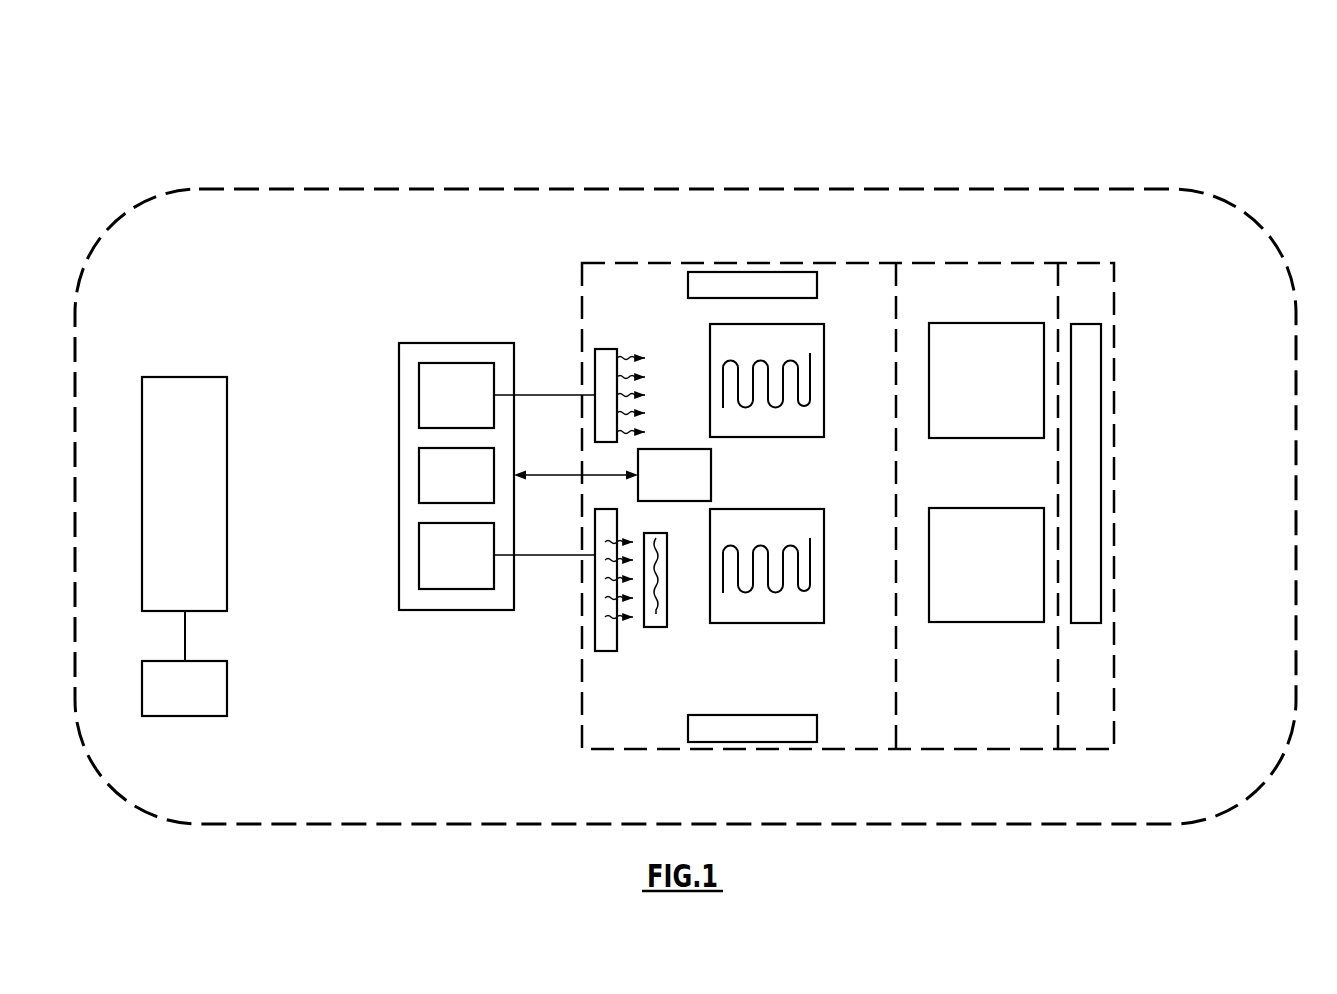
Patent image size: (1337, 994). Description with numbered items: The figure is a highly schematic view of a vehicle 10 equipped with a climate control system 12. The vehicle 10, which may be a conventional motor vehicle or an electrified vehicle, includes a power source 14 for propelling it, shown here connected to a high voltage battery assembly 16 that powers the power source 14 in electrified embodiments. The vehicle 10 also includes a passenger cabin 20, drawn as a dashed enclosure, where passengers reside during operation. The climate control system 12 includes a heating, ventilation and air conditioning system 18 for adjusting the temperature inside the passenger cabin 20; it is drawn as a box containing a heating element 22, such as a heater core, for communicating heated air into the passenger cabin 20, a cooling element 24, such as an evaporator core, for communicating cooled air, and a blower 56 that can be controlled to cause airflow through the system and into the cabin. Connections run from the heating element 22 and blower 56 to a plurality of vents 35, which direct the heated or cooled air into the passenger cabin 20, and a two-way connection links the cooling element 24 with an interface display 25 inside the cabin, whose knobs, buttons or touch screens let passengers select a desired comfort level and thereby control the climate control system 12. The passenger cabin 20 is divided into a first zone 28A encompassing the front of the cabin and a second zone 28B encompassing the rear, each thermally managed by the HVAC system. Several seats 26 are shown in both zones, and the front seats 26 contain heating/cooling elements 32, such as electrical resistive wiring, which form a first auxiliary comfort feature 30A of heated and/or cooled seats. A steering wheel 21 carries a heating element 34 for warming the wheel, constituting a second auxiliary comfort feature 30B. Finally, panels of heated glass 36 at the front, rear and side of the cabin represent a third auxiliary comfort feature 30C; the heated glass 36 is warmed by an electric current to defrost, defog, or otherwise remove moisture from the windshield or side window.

The vehicle 10 is at (714, 140).
The climate control system 12 is at (540, 346).
The power source 14 is at (200, 506).
The high voltage battery assembly 16 is at (200, 700).
The heating, ventilation and air conditioning (HVAC) system 18 is at (444, 337).
The passenger cabin 20 is at (743, 262).
The steering wheel 21 is at (657, 533).
The heating element 22 is at (471, 407).
The cooling element 24 is at (471, 487).
The interface display 25 is at (689, 487).
The seat 26 is at (824, 333).
The first zone 28A is at (690, 350).
The second zone 28B is at (987, 308).
The first auxiliary comfort feature 30A is at (729, 326).
The second auxiliary comfort feature 30B is at (655, 638).
The third auxiliary comfort feature 30C is at (797, 265).
The heating/cooling elements 32 is at (781, 407).
The heating element 34 is at (665, 603).
The vents 35 is at (607, 349).
The heated glass 36 is at (808, 287).
The blower 56 is at (471, 570).